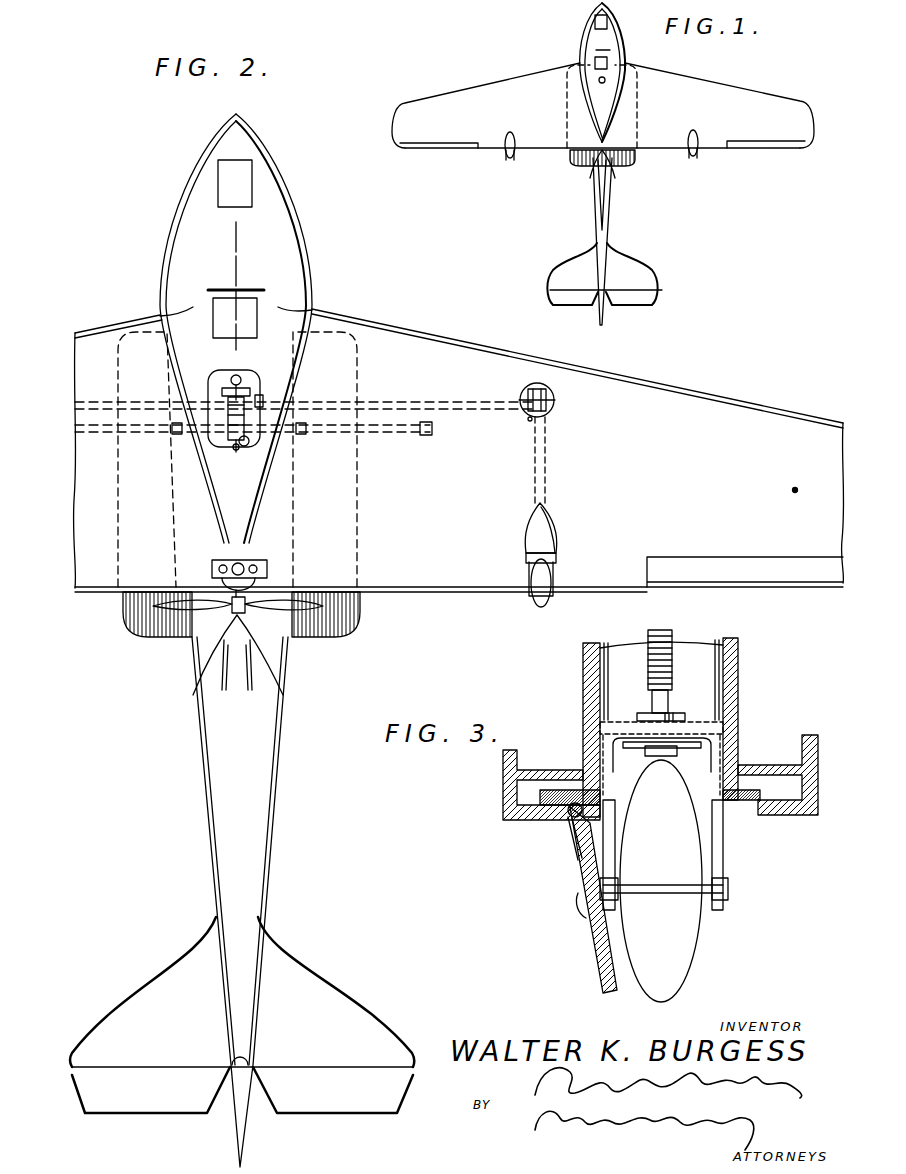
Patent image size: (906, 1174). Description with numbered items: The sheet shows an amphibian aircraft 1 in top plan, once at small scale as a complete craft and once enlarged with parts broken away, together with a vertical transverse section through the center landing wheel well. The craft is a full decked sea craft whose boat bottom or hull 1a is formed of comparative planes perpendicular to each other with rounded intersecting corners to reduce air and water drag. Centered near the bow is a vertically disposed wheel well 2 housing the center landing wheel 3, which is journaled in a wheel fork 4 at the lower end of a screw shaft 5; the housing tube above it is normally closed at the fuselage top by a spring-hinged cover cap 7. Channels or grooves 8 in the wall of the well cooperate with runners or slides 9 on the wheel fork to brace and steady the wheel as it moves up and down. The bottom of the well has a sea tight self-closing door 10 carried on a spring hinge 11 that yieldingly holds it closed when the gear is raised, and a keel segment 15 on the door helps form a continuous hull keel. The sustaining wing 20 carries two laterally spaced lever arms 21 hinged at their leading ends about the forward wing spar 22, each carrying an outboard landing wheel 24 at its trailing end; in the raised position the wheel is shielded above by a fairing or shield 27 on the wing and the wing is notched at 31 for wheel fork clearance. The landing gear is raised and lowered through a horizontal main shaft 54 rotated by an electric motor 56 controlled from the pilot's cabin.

In FIG. 2, the amphibian aircraft 1 is at (283, 181).
In FIG. 1, the amphibian aircraft 1 is at (583, 41).
In FIG. 3, the boat bottom or hull 1a is at (790, 819).
In FIG. 3, the wheel well 2 is at (742, 703).
In FIG. 3, the center landing wheel 3 is at (690, 968).
In FIG. 3, the wheel fork 4 is at (631, 728).
In FIG. 2, the screw shaft 5 is at (239, 387).
In FIG. 3, the screw shaft 5 is at (648, 633).
In FIG. 1, the spring-hinged cover cap 7 is at (605, 80).
In FIG. 3, the spring-hinged cover cap 7 is at (740, 805).
In FIG. 3, the channels or grooves 8 is at (601, 703).
In FIG. 3, the runners or slides 9 is at (598, 744).
In FIG. 3, the self-closing door 10 is at (590, 930).
In FIG. 2, the spring hinge 11 is at (550, 331).
In FIG. 3, the spring hinge 11 is at (568, 844).
In FIG. 3, the keel segment 15 is at (572, 906).
In FIG. 2, the sustaining wing 20 is at (100, 337).
In FIG. 1, the sustaining wing 20 is at (456, 100).
In FIG. 2, the lever arms 21 is at (545, 472).
In FIG. 2, the forward wing spar 22 is at (125, 408).
In FIG. 2, the landing wheel 24 is at (546, 597).
In FIG. 1, the landing wheel 24 is at (511, 159).
In FIG. 2, the fairing or shield 27 is at (556, 536).
In FIG. 1, the fairing or shield 27 is at (506, 138).
In FIG. 2, the notch 31 is at (558, 561).
In FIG. 2, the main shaft 54 is at (233, 447).
In FIG. 2, the electric motor 56 is at (259, 399).